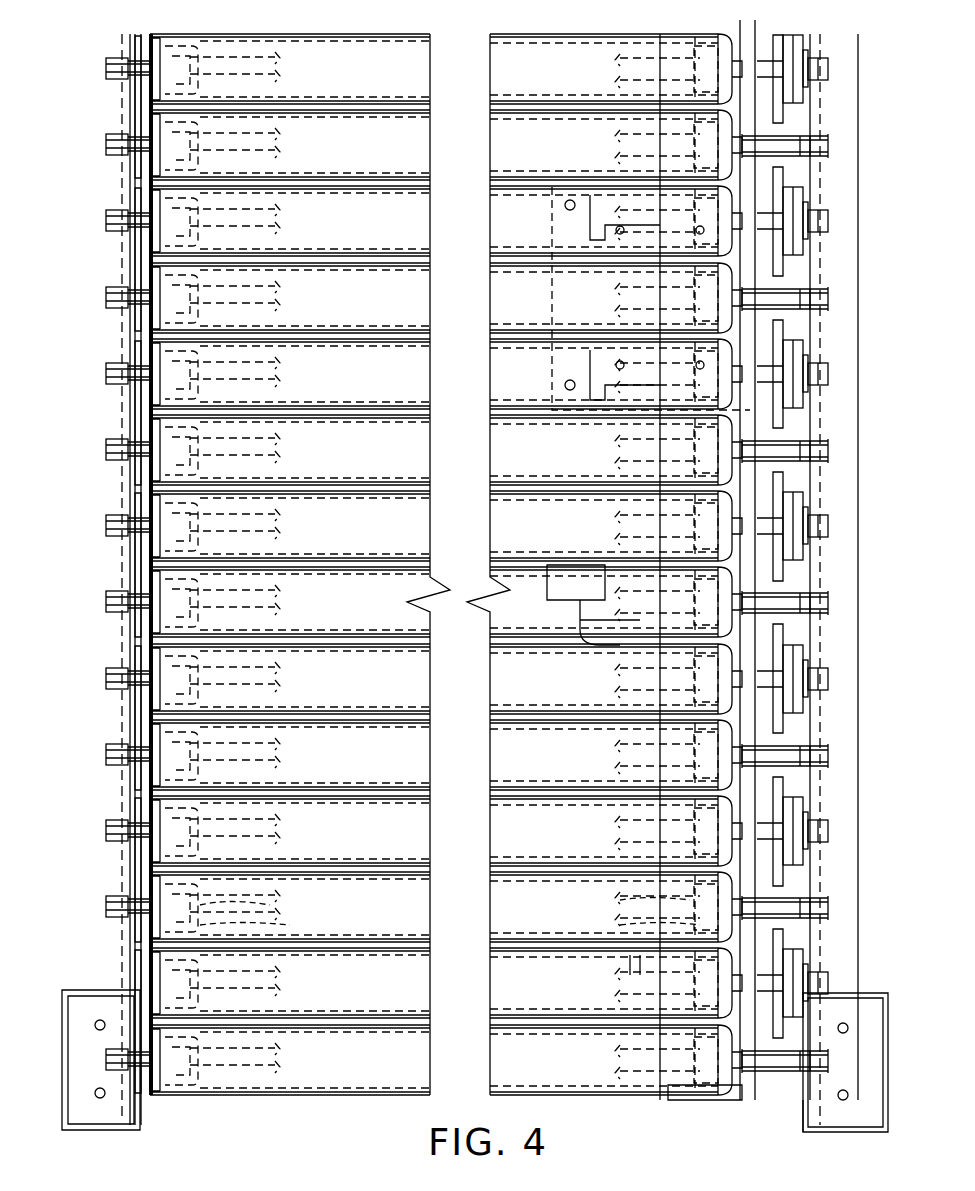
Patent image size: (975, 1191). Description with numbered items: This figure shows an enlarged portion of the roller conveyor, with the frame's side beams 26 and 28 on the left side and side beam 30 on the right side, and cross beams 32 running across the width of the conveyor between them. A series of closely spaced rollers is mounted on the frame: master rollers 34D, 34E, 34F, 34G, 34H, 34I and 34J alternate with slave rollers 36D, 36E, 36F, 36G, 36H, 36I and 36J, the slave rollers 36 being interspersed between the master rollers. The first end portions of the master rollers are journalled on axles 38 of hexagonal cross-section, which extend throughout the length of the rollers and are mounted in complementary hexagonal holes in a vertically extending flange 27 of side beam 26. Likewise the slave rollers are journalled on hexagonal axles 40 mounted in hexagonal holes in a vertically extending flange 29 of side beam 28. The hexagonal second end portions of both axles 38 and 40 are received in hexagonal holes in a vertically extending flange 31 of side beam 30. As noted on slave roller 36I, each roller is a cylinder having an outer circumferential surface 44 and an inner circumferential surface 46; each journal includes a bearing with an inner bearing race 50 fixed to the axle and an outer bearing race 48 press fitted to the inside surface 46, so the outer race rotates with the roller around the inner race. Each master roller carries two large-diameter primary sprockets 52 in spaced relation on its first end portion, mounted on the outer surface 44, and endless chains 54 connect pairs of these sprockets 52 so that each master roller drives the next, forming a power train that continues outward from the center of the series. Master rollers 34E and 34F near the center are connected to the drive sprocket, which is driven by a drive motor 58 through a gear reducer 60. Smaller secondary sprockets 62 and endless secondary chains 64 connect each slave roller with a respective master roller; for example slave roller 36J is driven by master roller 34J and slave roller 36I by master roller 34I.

The side beam 26 is at (843, 1132).
The vertically extending flange 27 is at (810, 1125).
The side beam 28 is at (705, 1100).
The vertically extending flange 29 is at (755, 1100).
The side beam 30 is at (115, 1130).
The vertically extending flange 31 is at (135, 1125).
The cross beam 32 is at (835, 885).
The master roller 34D is at (390, 67).
The master roller 34E is at (544, 235).
The master roller 34F is at (387, 390).
The master roller 34G is at (548, 539).
The master roller 34H is at (395, 681).
The master roller 34I is at (560, 841).
The master roller 34J is at (407, 1001).
The slave roller 36 is at (845, 318).
The slave roller 36D is at (393, 145).
The slave roller 36E is at (544, 309).
The slave roller 36F is at (387, 465).
The slave roller 36G is at (548, 624).
The slave roller 36H is at (400, 762).
The slave roller 36I is at (562, 921).
The slave roller 36J is at (407, 1071).
The axle 38 is at (828, 830).
The axle 40 is at (830, 910).
The outer circumferential surface 44 is at (575, 975).
The inner circumferential surface 46 is at (610, 975).
The outer bearing race 48 is at (620, 925).
The inner bearing race 50 is at (620, 900).
The primary sprocket 52 is at (742, 1020).
The endless chain 54 is at (790, 935).
The drive motor 58 is at (582, 645).
The gear reducer 60 is at (625, 195).
The secondary sprocket 62 is at (151, 1090).
The endless secondary chain 64 is at (106, 905).